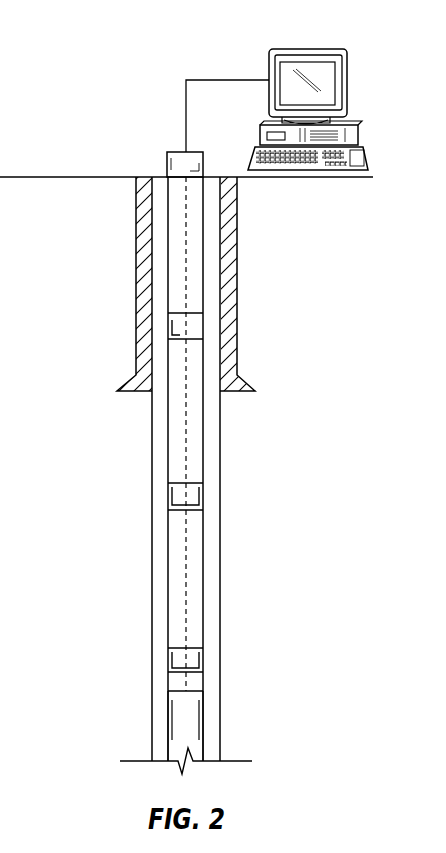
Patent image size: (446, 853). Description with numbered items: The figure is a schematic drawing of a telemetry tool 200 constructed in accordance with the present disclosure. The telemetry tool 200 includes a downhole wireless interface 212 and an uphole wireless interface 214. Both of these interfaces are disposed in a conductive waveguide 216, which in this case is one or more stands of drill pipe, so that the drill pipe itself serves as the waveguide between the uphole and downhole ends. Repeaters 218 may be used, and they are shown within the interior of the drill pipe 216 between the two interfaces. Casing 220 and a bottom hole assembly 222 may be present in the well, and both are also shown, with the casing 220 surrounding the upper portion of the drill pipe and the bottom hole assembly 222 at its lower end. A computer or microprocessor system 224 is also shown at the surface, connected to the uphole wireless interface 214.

The well logging system 200 is at (126, 123).
The acoustic transmitter/receiver section 212 is at (167, 660).
The surface unit 214 is at (167, 165).
The logging tool string 216 is at (203, 582).
The tool section 218 is at (168, 496).
The casing 220 is at (237, 323).
The lower tool body 222 is at (167, 712).
The computer 224 is at (307, 50).